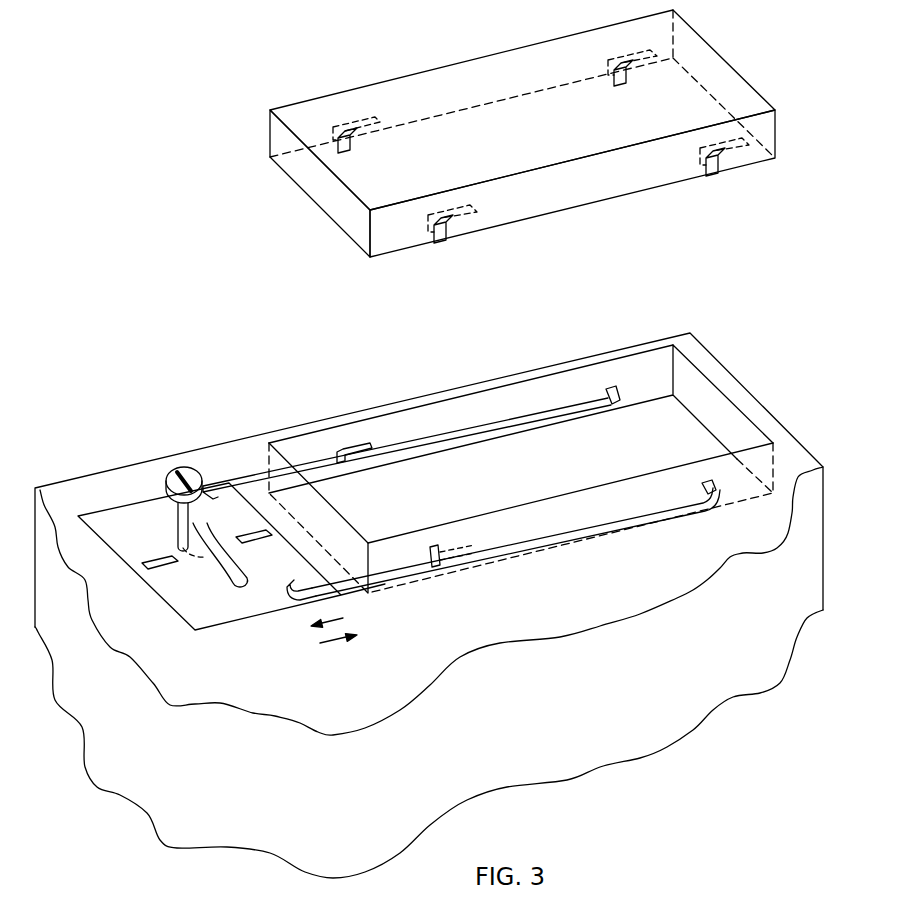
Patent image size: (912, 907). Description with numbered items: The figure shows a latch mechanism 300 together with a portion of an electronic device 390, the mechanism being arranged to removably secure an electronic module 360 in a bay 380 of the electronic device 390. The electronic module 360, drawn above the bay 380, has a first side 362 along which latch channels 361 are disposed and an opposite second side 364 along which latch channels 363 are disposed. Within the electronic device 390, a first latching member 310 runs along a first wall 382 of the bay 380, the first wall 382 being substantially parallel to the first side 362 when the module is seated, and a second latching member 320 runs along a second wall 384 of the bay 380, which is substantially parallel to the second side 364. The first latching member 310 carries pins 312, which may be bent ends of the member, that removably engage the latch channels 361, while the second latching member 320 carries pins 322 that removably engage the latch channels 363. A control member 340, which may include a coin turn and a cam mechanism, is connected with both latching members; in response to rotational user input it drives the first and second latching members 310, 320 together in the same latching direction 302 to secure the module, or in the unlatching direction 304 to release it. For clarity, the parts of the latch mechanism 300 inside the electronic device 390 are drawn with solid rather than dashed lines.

The latch mechanism 300 is at (157, 508).
The latching direction 302 is at (325, 643).
The unlatching direction 304 is at (310, 627).
The first latching member 310 is at (533, 540).
The pins 312 is at (443, 550).
The second latching member 320 is at (248, 477).
The pins 322 is at (350, 455).
The control member 340 is at (182, 470).
The electronic module 360 is at (272, 194).
The latch channels 361 is at (703, 173).
The first side 362 is at (393, 238).
The latch channels 363 is at (613, 53).
The second side 364 is at (320, 108).
The bay 380 is at (687, 421).
The first wall 382 is at (640, 493).
The second wall 384 is at (313, 438).
The electronic device 390 is at (710, 683).